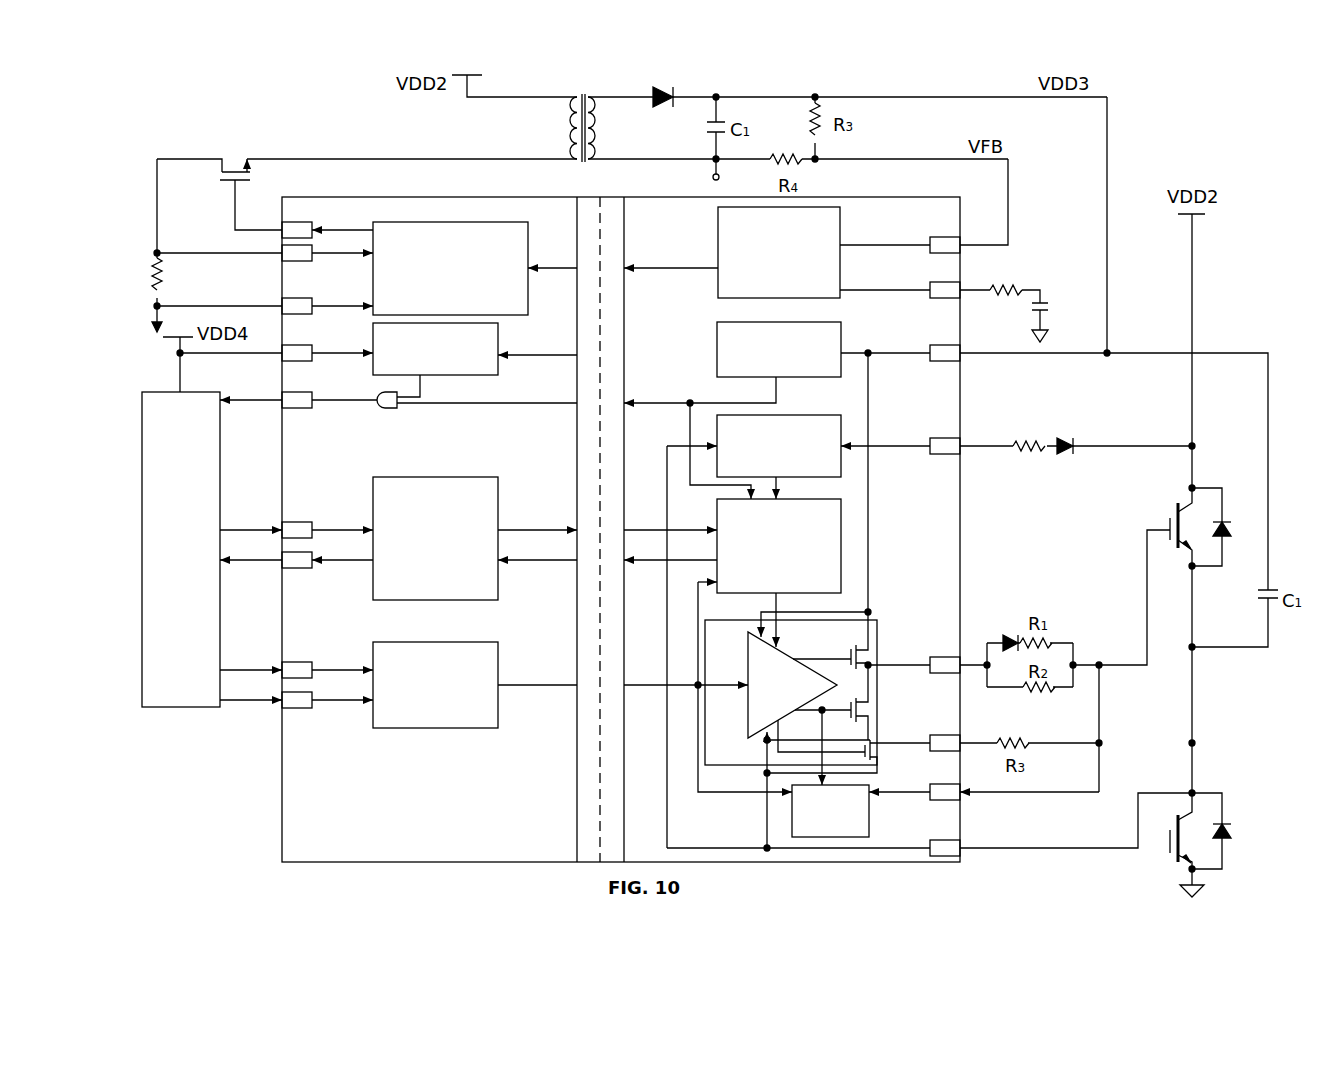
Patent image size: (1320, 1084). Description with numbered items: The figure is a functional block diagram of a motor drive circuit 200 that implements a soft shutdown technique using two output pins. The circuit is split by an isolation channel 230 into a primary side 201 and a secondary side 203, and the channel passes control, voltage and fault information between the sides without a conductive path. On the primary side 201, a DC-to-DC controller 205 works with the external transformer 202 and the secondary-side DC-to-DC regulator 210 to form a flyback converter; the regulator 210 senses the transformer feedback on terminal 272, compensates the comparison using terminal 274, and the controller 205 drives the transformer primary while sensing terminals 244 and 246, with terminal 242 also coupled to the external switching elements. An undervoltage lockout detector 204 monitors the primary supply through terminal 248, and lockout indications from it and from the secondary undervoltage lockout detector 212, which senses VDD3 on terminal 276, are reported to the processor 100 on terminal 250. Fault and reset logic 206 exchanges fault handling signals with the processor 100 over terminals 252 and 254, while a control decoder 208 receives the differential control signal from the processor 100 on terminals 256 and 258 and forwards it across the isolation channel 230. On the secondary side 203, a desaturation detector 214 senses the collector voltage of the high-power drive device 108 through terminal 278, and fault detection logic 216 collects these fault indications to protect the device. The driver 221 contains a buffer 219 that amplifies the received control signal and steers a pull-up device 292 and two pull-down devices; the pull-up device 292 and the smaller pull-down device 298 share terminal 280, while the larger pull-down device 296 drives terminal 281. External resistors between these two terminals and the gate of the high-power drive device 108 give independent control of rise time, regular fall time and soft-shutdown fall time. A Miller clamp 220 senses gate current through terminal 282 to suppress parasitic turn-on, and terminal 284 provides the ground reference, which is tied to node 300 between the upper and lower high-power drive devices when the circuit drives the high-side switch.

The processor 100 is at (181, 549).
The high-power drive device 108 is at (1167, 526).
The motor drive circuit 200 is at (412, 200).
The primary side 201 is at (558, 529).
The external transformer 202 is at (567, 146).
The secondary side 203 is at (665, 529).
The undervoltage lockout detector 204 is at (435, 349).
The DC-to-DC controller 205 is at (450, 268).
The fault and reset logic 206 is at (435, 538).
The control decoder 208 is at (435, 685).
The DC-to-DC regulator 210 is at (779, 252).
The undervoltage lockout detector 212 is at (779, 349).
The desaturation detector 214 is at (779, 446).
The fault detection logic 216 is at (779, 546).
The buffer 219 is at (792, 685).
The Miller clamp 220 is at (830, 811).
The driver 221 is at (791, 692).
The isolation channel 230 is at (610, 256).
The terminal 242 is at (312, 224).
The terminal 244 is at (312, 262).
The terminal 246 is at (312, 298).
The terminal 248 is at (312, 347).
The terminal 250 is at (312, 392).
The terminal 252 is at (312, 523).
The terminal 254 is at (312, 556).
The differential terminal 256 is at (312, 663).
The differential terminal 258 is at (312, 694).
The terminal 272 is at (930, 244).
The terminal 274 is at (930, 289).
The terminal 276 is at (930, 352).
The terminal 278 is at (930, 445).
The terminal 280 is at (955, 664).
The terminal 281 is at (955, 740).
The terminal 282 is at (955, 806).
The terminal 284 is at (930, 847).
The pull-up device 292 is at (852, 653).
The pull-down device 296 is at (877, 758).
The pull-down device 298 is at (864, 704).
The node 300 is at (1190, 792).